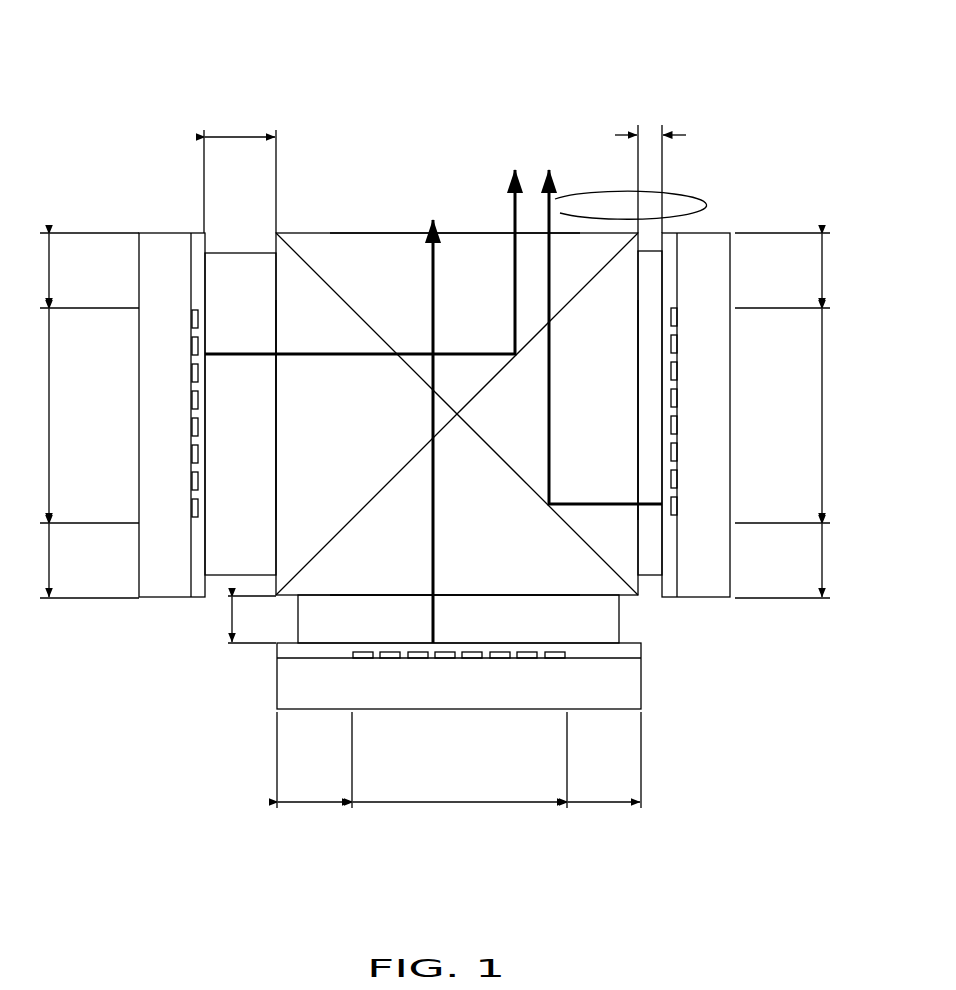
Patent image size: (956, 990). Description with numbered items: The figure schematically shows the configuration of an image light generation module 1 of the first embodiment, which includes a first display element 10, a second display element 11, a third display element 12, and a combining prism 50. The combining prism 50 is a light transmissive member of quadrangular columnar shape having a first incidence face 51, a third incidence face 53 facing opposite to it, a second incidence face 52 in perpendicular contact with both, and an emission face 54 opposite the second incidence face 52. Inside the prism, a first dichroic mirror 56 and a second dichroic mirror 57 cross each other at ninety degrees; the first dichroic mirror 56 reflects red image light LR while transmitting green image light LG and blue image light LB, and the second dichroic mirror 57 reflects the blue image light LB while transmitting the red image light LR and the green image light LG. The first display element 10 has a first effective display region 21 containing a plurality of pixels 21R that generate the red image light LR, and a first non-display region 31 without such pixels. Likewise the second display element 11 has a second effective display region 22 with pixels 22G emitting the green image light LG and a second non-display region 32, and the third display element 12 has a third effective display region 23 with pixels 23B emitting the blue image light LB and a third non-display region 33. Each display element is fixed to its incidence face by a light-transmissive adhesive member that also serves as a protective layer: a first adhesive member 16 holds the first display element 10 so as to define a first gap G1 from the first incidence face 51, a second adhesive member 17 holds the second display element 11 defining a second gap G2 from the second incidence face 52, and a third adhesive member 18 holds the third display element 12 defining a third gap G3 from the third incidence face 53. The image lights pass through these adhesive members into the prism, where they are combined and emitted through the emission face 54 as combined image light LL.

The image light generation module 1 is at (690, 88).
The first display element 10 is at (163, 229).
The second display element 11 is at (643, 678).
The third display element 12 is at (717, 229).
The first adhesive member 16 is at (246, 265).
The second adhesive member 17 is at (618, 618).
The third adhesive member 18 is at (652, 242).
The first effective display region 21 is at (31, 415).
The pixels 21R is at (191, 393).
The second effective display region 22 is at (459, 820).
The pixels 22G is at (440, 658).
The third effective display region 23 is at (841, 415).
The pixels 23B is at (678, 396).
The first non-display region 31 is at (76, 415).
The second non-display region 32 is at (459, 775).
The third non-display region 33 is at (797, 415).
The combining prism 50 is at (347, 230).
The first incidence face 51 is at (276, 398).
The second incidence face 52 is at (405, 595).
The third incidence face 53 is at (640, 366).
The emission face 54 is at (604, 230).
The first dichroic mirror 56 is at (348, 518).
The second dichroic mirror 57 is at (560, 516).
The first gap G1 is at (240, 168).
The second gap G2 is at (231, 619).
The third gap G3 is at (650, 165).
The combined image light LL is at (470, 192).
The red image light LR is at (318, 353).
The green image light LG is at (434, 494).
The blue image light LB is at (604, 503).